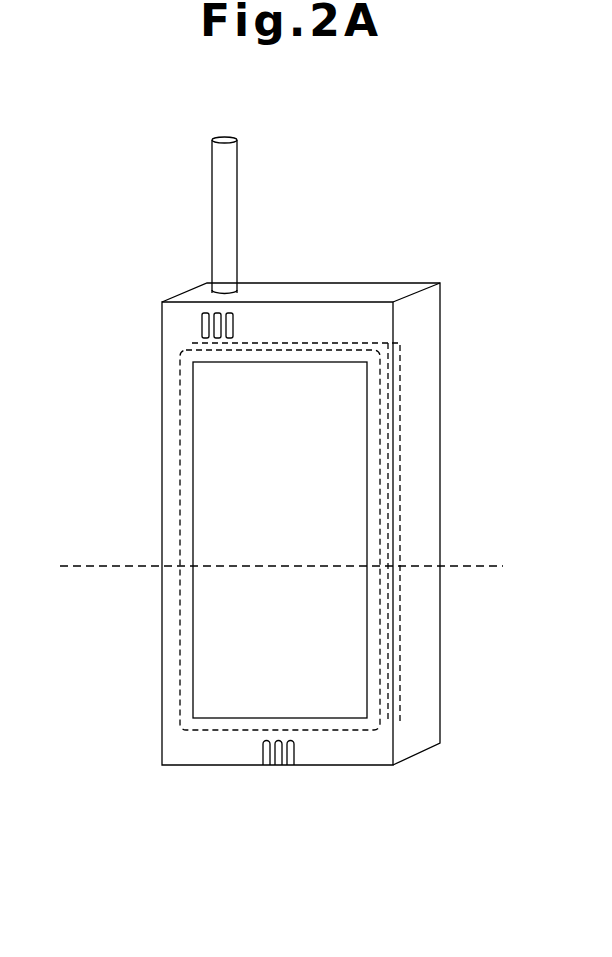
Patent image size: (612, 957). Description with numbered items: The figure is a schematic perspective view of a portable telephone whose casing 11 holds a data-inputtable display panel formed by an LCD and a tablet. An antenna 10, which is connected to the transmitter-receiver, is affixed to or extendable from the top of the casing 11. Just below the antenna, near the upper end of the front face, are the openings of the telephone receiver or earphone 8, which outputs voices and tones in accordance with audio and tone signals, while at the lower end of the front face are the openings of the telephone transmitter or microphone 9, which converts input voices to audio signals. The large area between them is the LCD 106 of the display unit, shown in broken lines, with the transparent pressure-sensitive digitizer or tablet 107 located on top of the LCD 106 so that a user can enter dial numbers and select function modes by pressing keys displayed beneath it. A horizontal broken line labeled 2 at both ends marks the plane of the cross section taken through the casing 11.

The receiving circuit 2 is at (281, 552).
The telephone receiver 8 is at (234, 327).
The telephone transmitter 9 is at (278, 766).
The antenna 10 is at (232, 168).
The casing 11 is at (427, 324).
The LCD 106 is at (400, 432).
The digitizer 107 is at (215, 438).